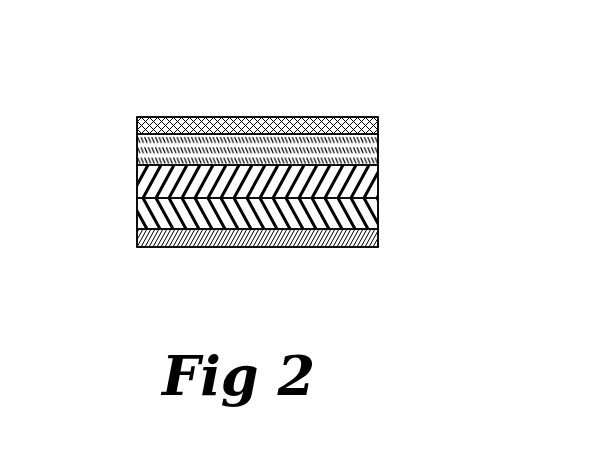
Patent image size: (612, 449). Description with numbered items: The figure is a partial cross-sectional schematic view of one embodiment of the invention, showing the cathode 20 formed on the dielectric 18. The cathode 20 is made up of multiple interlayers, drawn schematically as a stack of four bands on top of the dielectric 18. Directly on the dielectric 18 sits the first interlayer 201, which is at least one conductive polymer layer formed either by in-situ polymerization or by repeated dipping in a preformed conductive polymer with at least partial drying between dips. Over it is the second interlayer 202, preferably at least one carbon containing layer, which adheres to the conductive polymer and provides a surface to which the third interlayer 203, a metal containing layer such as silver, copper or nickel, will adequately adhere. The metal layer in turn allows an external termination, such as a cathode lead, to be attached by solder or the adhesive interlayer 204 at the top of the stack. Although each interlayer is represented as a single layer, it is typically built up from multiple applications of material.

The cathode 20 is at (394, 115).
The dielectric 18 is at (150, 240).
The first interlayer 201 is at (240, 208).
The second interlayer 202 is at (300, 178).
The third interlayer 203 is at (237, 152).
The adhesive interlayer 204 is at (160, 126).